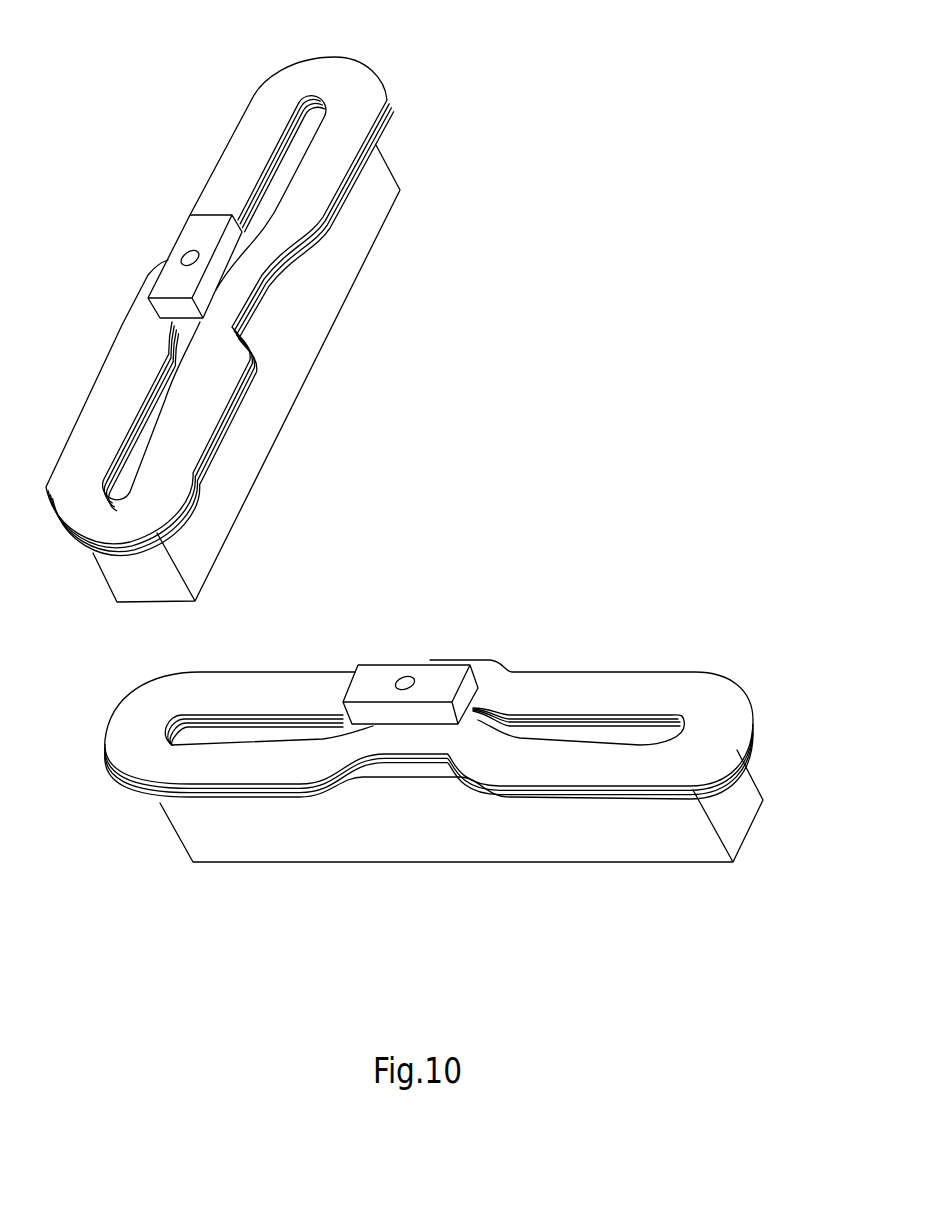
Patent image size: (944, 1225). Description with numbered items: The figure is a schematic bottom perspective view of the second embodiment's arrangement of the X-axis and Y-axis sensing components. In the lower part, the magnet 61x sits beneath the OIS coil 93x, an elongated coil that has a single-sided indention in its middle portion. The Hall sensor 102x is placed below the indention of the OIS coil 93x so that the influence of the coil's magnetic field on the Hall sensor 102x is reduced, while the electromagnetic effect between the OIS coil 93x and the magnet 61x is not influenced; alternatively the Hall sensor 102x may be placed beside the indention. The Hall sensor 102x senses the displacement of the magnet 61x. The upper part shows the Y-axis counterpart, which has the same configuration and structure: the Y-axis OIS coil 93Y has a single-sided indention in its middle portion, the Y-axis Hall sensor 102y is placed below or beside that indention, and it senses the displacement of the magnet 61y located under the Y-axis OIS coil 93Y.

The Y-axis OIS coil 93Y is at (362, 82).
The magnet 61y is at (370, 173).
The Y-axis Hall sensor 102y is at (203, 233).
The OIS coil 93x is at (693, 693).
The magnet 61x is at (733, 792).
The Hall sensor 102x is at (434, 680).